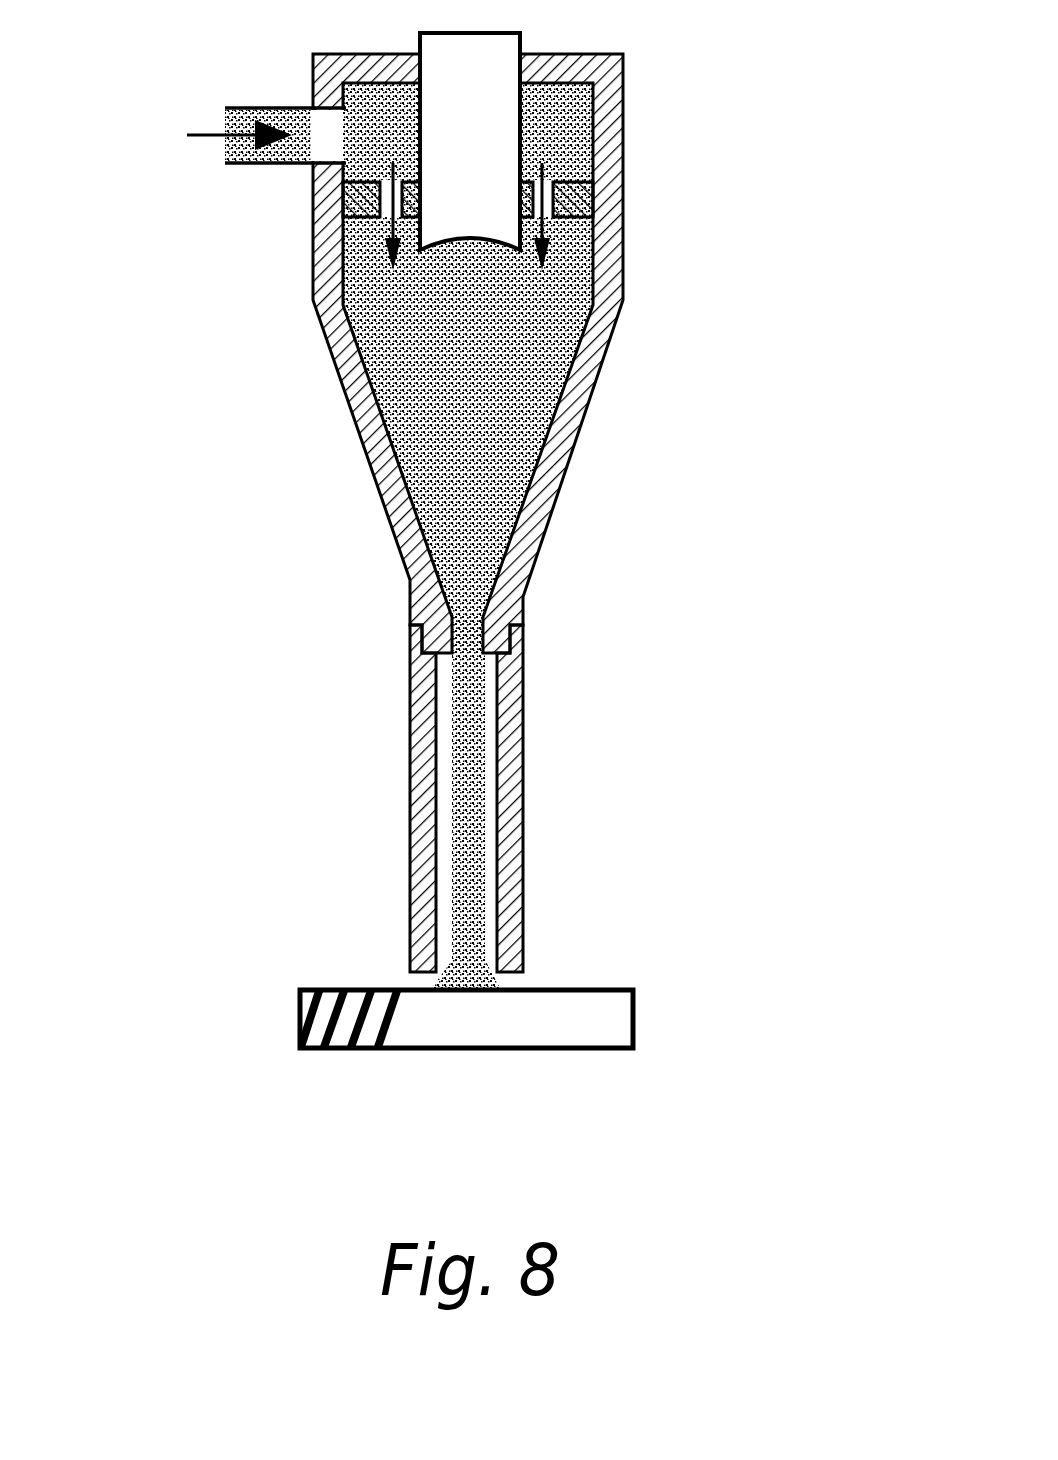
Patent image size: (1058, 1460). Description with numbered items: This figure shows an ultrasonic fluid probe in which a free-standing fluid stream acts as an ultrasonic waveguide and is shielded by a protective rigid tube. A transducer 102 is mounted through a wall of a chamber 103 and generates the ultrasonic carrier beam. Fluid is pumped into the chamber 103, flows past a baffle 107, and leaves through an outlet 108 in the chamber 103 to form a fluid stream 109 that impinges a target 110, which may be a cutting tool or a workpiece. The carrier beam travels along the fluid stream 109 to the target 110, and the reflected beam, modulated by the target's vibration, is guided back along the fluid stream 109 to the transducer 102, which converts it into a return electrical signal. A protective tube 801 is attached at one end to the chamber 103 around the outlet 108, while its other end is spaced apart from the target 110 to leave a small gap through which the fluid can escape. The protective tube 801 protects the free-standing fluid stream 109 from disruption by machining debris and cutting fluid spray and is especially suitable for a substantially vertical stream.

The transducer 102 is at (503, 153).
The chamber 103 is at (570, 412).
The baffle 107 is at (591, 186).
The outlet 108 is at (472, 632).
The fluid stream 109 is at (470, 853).
The target 110 is at (552, 1018).
The protective tube 801 is at (420, 747).